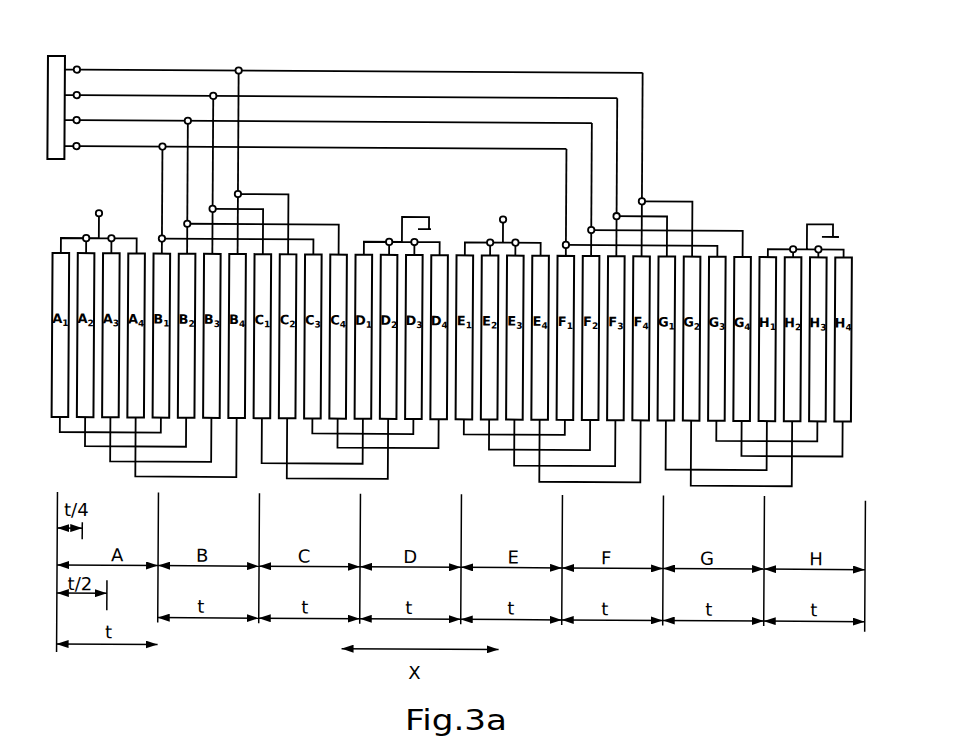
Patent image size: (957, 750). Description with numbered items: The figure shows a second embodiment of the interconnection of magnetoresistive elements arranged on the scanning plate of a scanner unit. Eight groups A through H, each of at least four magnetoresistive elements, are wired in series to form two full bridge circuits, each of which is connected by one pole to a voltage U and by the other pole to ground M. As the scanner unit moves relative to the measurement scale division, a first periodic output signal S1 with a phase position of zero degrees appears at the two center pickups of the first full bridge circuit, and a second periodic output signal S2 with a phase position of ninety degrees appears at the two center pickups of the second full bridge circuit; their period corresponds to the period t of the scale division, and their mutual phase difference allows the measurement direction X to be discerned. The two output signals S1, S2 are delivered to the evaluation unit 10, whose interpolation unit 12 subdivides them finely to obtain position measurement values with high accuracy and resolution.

The evaluation unit 10 is at (54, 57).
The interpolation unit 12 is at (66, 58).
The first periodic output signal S1 is at (80, 94).
The second periodic output signal S2 is at (80, 68).
The voltage U is at (95, 210).
The ground M is at (430, 227).